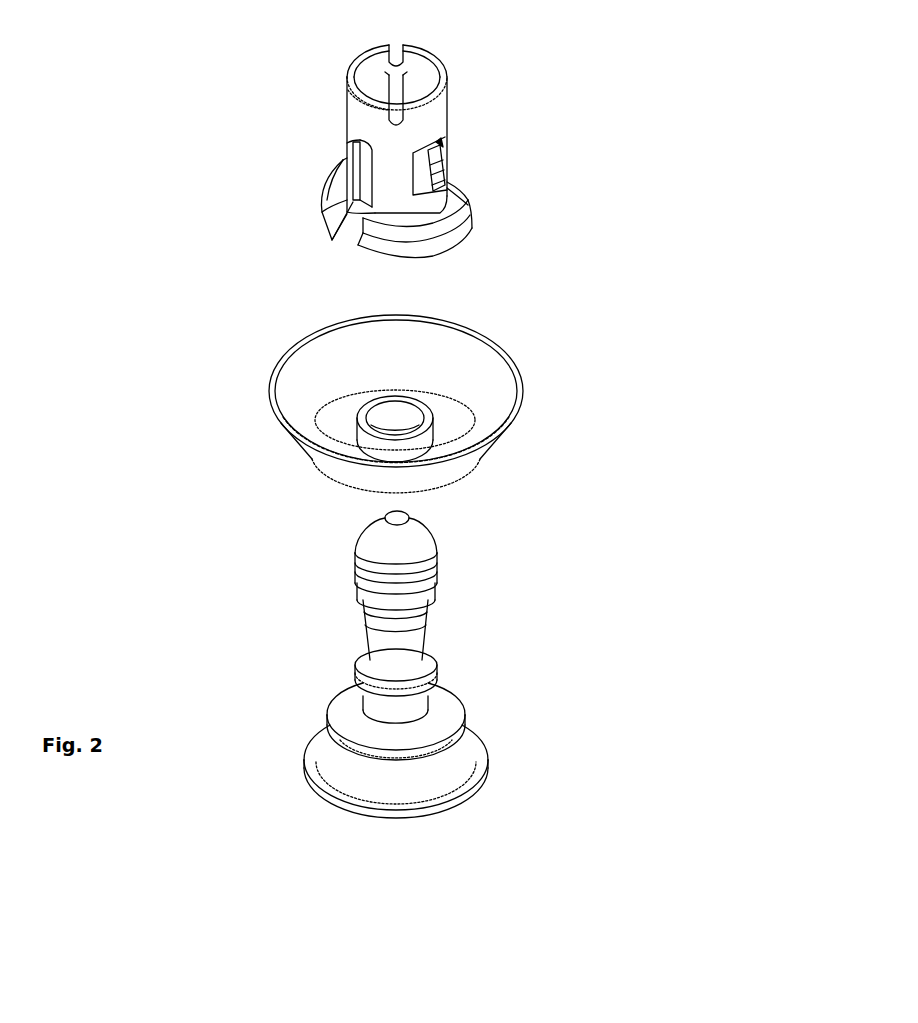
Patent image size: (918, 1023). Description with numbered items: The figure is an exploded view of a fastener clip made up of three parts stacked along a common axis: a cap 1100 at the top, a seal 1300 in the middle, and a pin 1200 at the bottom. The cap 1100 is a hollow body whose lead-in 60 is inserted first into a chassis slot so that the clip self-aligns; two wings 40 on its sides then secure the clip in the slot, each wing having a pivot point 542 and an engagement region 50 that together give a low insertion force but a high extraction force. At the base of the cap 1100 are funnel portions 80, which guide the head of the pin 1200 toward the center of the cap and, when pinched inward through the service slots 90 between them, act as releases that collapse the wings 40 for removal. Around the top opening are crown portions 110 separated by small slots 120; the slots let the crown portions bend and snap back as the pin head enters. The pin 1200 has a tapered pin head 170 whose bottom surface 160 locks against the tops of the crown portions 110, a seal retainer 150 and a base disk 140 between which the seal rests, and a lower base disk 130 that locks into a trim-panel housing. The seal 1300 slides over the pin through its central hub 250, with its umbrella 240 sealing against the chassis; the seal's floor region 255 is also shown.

The cap 1100 is at (653, 100).
The crown portions 110 is at (430, 92).
The small slots 120 is at (398, 92).
The lead-in 60 is at (349, 103).
The wings 40 is at (347, 143).
The pivot point 542 is at (441, 145).
The engagement region 50 is at (440, 193).
The funnel portions 80 is at (463, 238).
The service slots 90 is at (363, 200).
The seal 1300 is at (642, 363).
The umbrella 240 is at (465, 462).
The central hub 250 is at (363, 410).
The bowl floor 255 is at (333, 435).
The pin 1200 is at (658, 627).
The pin head 170 is at (373, 547).
The bottom surface 160 is at (430, 570).
The seal retainer 150 is at (358, 667).
The base disk 140 is at (342, 717).
The base disk 130 is at (480, 778).